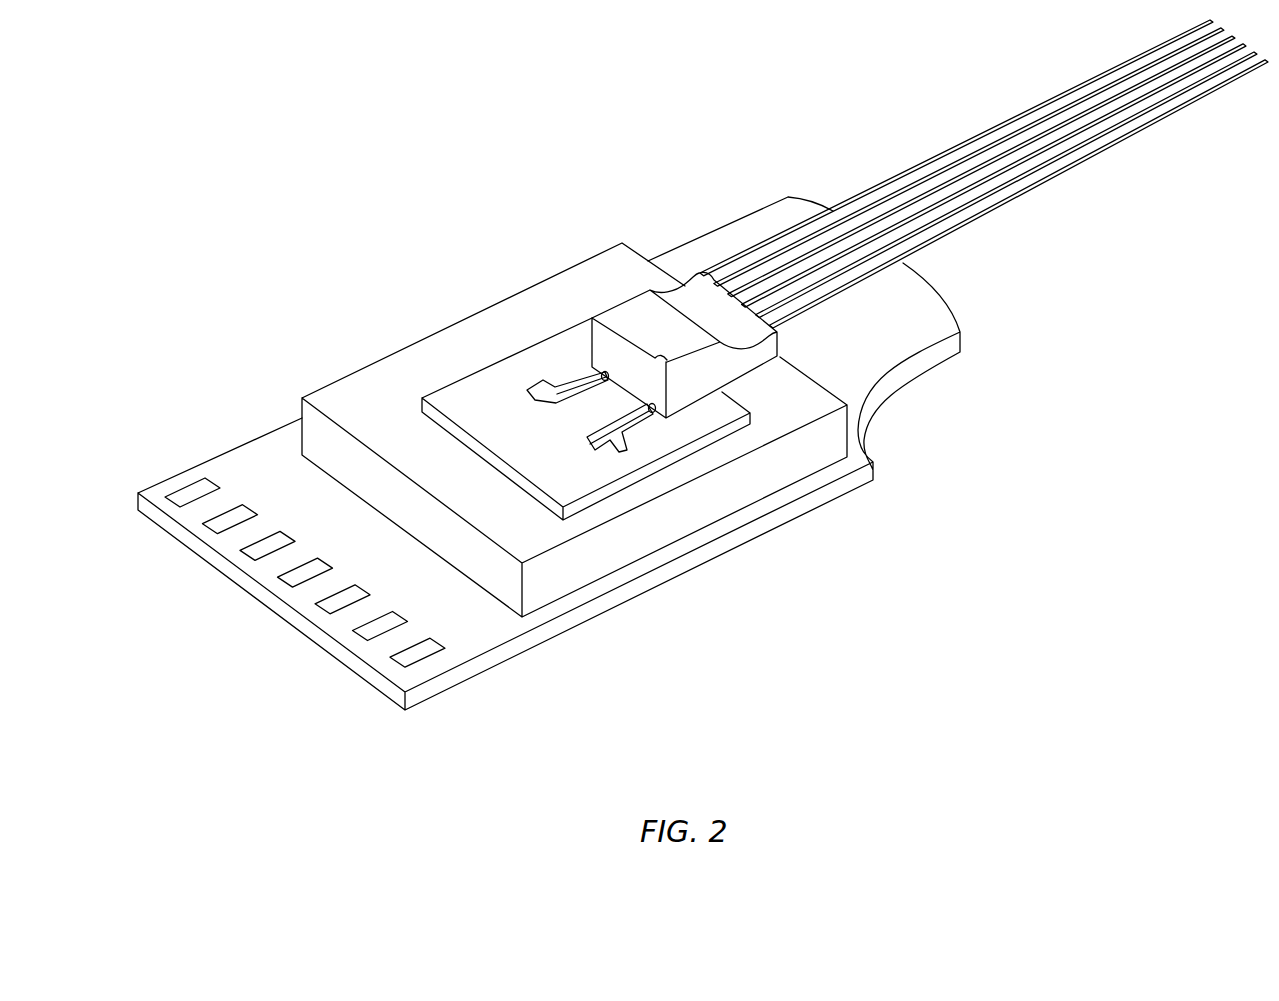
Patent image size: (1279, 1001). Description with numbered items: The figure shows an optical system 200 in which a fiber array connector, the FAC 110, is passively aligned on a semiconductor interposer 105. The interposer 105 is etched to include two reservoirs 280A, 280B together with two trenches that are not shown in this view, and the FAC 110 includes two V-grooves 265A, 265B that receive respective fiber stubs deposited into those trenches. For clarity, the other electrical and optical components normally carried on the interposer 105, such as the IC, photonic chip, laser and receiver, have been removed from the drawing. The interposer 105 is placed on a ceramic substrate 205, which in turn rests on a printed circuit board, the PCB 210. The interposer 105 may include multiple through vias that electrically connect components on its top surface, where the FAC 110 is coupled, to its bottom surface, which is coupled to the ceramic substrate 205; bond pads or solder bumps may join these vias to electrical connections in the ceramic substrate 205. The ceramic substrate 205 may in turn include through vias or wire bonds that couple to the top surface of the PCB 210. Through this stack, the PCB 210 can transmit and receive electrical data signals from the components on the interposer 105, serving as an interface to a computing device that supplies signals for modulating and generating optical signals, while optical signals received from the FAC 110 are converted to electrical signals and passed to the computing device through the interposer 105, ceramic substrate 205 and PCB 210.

The optical system 200 is at (703, 365).
The semiconductor interposer 105 is at (437, 393).
The FAC 110 is at (698, 272).
The ceramic substrate 205 is at (673, 546).
The printed circuit board (PCB) 210 is at (591, 626).
The V-groove 265A is at (606, 360).
The V-groove 265B is at (654, 381).
The reservoir 280A is at (537, 405).
The reservoir 280B is at (597, 449).